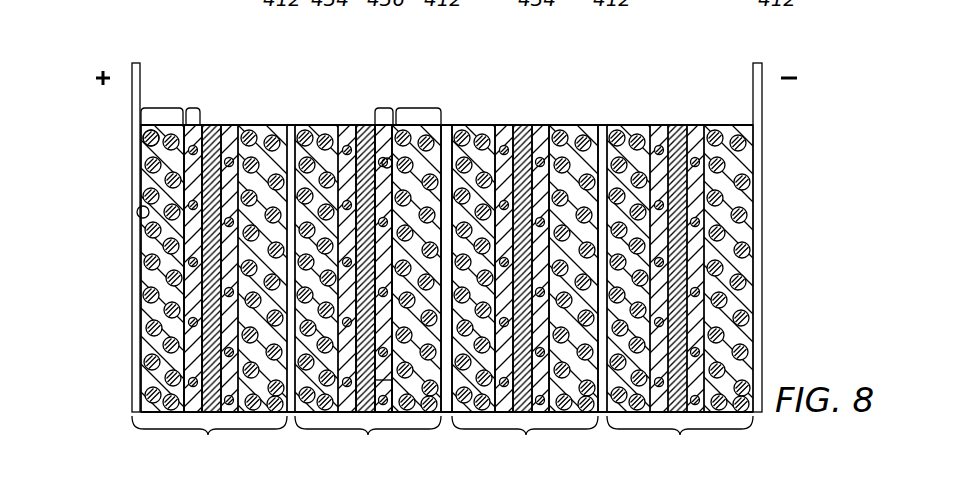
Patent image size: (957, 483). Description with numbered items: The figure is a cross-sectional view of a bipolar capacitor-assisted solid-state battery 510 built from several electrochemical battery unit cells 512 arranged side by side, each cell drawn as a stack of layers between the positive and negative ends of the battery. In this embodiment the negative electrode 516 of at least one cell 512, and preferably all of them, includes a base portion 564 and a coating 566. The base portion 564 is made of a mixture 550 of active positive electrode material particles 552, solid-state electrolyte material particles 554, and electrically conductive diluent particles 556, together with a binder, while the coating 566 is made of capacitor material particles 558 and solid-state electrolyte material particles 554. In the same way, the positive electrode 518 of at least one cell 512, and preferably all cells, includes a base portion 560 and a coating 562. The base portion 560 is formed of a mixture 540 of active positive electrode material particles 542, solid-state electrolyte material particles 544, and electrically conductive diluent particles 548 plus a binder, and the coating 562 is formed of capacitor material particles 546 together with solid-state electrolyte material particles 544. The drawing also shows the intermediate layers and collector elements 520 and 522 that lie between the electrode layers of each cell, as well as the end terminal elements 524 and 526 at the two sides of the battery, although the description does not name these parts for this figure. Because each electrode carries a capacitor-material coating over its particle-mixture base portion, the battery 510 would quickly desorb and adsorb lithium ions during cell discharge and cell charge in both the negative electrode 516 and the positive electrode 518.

The bipolar capacitor-assisted solid-state battery 510 is at (76, 52).
The electrochemical battery unit cell 512 is at (442, 441).
The negative electrode 516 is at (567, 112).
The positive electrode 518 is at (482, 112).
The current collector 520 is at (522, 125).
The separator 522 is at (291, 125).
The positive terminal 524 is at (160, 220).
The negative terminal 526 is at (753, 68).
The mixture 540 is at (142, 265).
The active positive electrode material particles 542 is at (150, 138).
The solid-state electrolyte material particles 544 is at (200, 323).
The capacitor material particles 546 is at (190, 205).
The electrically conductive diluent particles 548 is at (140, 213).
The mixture 550 is at (385, 366).
The active positive electrode material particles 552 is at (385, 160).
The solid-state electrolyte material particles 554 is at (398, 397).
The electrically conductive diluent particles 556 is at (427, 388).
The capacitor material particles 558 is at (367, 145).
The base portion 560 is at (161, 108).
The coating 562 is at (194, 108).
The base portion 564 is at (418, 108).
The coating 566 is at (381, 108).